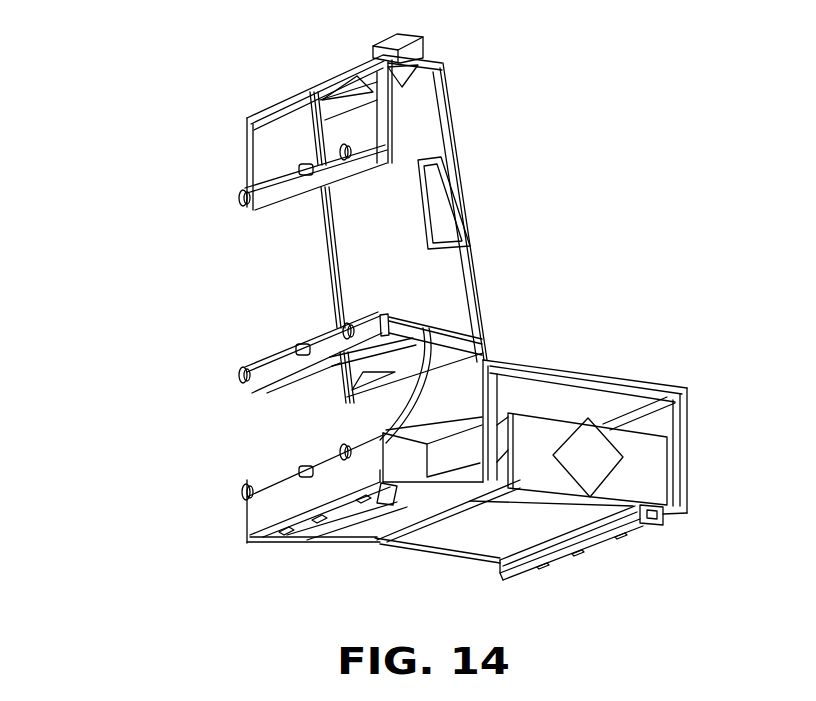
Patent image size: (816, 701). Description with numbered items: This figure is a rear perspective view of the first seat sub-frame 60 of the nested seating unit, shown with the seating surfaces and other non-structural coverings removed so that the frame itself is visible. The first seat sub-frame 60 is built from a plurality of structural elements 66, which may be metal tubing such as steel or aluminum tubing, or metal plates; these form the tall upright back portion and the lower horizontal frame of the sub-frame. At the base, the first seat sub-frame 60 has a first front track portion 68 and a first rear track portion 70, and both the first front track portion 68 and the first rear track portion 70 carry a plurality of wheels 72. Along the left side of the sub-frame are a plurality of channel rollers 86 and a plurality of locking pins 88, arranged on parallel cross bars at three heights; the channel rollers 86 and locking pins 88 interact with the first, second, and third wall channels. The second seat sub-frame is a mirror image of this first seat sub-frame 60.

The first seat sub-frame 60 is at (443, 102).
The structural elements 66 is at (280, 103).
The first front track portion 68 is at (665, 527).
The first rear track portion 70 is at (263, 527).
The wheels 72 is at (362, 503).
The channel rollers 86 is at (346, 160).
The locking pins 88 is at (303, 176).